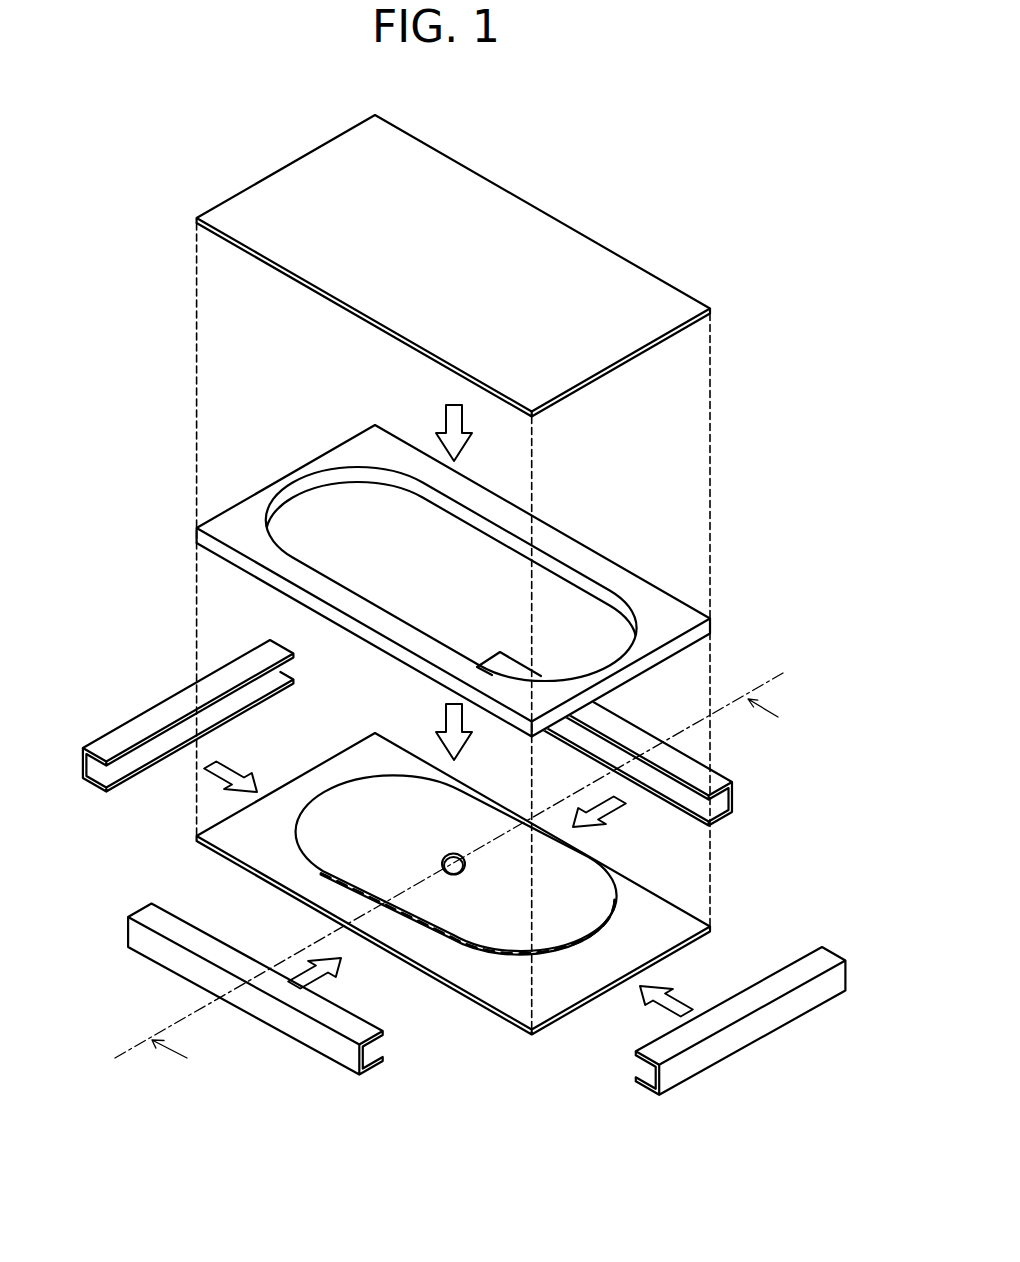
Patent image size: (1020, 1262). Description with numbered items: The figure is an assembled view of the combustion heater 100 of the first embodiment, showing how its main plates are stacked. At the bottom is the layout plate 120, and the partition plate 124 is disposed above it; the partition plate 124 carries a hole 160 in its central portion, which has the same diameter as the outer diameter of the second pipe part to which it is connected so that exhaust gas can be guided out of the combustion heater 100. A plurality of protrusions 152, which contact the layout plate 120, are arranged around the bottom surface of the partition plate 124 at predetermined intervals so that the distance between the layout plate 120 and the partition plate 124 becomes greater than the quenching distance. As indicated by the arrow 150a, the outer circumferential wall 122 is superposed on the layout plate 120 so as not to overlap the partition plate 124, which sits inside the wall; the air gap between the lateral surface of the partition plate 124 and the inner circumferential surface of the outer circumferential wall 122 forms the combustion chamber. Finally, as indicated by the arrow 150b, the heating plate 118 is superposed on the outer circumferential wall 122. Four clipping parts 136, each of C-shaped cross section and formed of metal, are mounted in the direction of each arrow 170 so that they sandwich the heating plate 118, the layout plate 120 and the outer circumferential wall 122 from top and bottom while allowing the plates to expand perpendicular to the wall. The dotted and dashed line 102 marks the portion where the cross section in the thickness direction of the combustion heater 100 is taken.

The combustion heater 100 is at (100, 534).
The dotted and dashed line 102 is at (309, 950).
The heating plate 118 is at (624, 258).
The layout plate 120 is at (453, 866).
The outer circumferential wall 122 is at (624, 566).
The partition plate 124 is at (352, 775).
The clipping part 136 is at (148, 711).
The arrow 150a is at (466, 746).
The arrow 150b is at (463, 416).
The protrusions 152 is at (527, 951).
The hole 160 is at (465, 867).
The arrow 170 is at (250, 772).